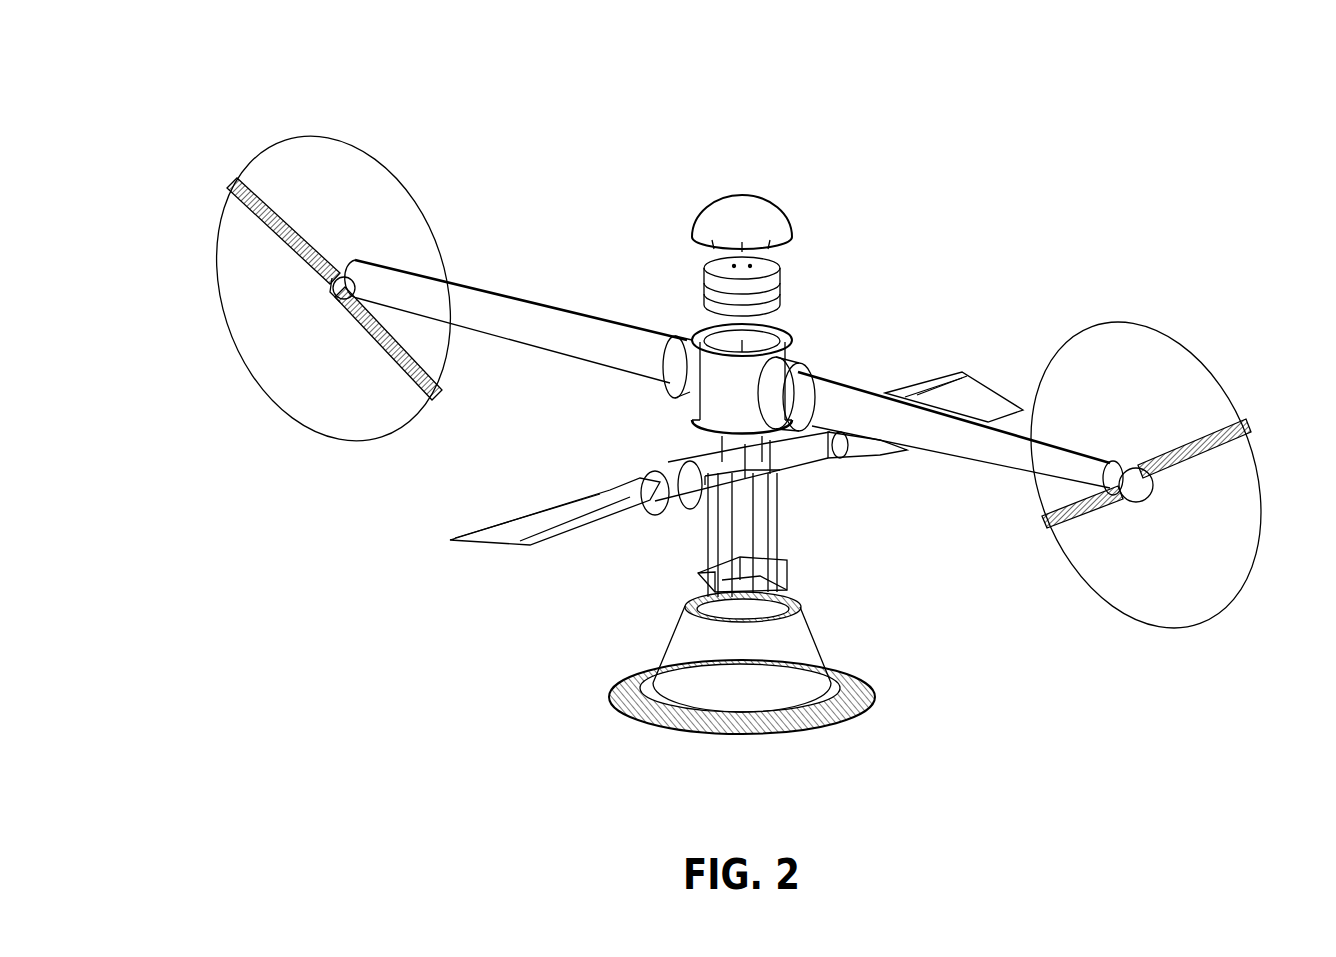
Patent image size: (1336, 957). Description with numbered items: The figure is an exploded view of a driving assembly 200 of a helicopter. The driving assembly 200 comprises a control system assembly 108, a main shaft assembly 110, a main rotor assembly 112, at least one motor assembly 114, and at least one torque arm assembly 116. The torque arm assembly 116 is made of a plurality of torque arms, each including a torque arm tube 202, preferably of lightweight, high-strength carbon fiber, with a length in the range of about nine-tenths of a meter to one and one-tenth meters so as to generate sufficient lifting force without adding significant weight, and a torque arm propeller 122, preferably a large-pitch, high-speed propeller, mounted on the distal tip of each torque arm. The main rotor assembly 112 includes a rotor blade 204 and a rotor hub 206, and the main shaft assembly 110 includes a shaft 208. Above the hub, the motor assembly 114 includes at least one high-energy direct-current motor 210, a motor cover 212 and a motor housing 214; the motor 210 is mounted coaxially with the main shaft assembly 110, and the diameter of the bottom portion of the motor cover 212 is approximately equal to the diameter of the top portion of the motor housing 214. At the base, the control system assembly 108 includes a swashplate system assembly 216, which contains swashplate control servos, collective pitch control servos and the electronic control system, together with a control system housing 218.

The driving assembly 200 is at (362, 112).
The torque arm tube 202 is at (553, 303).
The rotor blade 204 is at (955, 365).
The rotor hub 206 is at (727, 477).
The shaft 208 is at (730, 528).
The high-energy direct-current (DC) motor 210 is at (702, 270).
The motor cover 212 is at (795, 215).
The motor housing 214 is at (790, 332).
The swashplate system assembly 216 is at (700, 583).
The control system housing 218 is at (815, 640).
The control system assembly 108 is at (812, 610).
The main shaft assembly 110 is at (785, 518).
The main rotor assembly 112 is at (452, 541).
The motor assembly 114 is at (742, 180).
The torque arm assembly 116 is at (601, 403).
The torque arm propeller 122 is at (1190, 425).